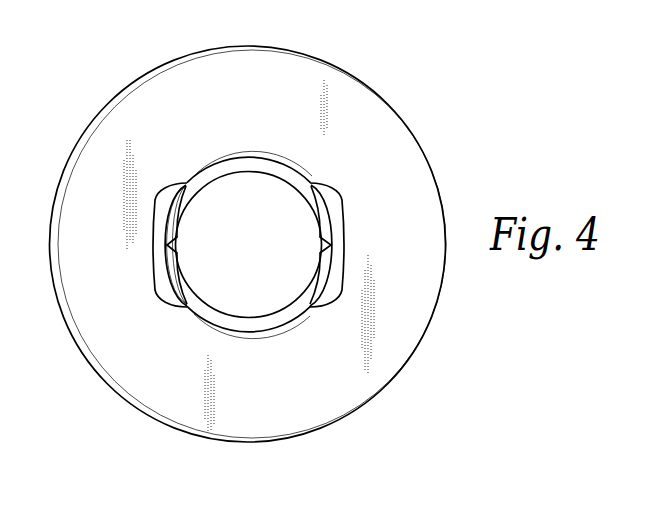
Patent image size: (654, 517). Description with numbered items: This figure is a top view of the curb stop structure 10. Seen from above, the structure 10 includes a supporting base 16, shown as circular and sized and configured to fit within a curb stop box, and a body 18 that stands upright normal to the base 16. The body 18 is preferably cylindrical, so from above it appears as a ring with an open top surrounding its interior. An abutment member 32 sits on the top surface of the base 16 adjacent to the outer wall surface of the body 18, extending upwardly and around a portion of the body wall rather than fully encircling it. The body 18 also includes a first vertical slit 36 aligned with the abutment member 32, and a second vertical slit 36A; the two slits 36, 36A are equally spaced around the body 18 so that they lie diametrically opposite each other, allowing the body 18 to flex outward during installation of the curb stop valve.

The curb stop structure 10 is at (427, 90).
The supporting base 16 is at (399, 323).
The body 18 is at (274, 330).
The abutment member 32 is at (163, 192).
The vertical slit 36 is at (160, 293).
The second vertical slit 36A is at (333, 245).